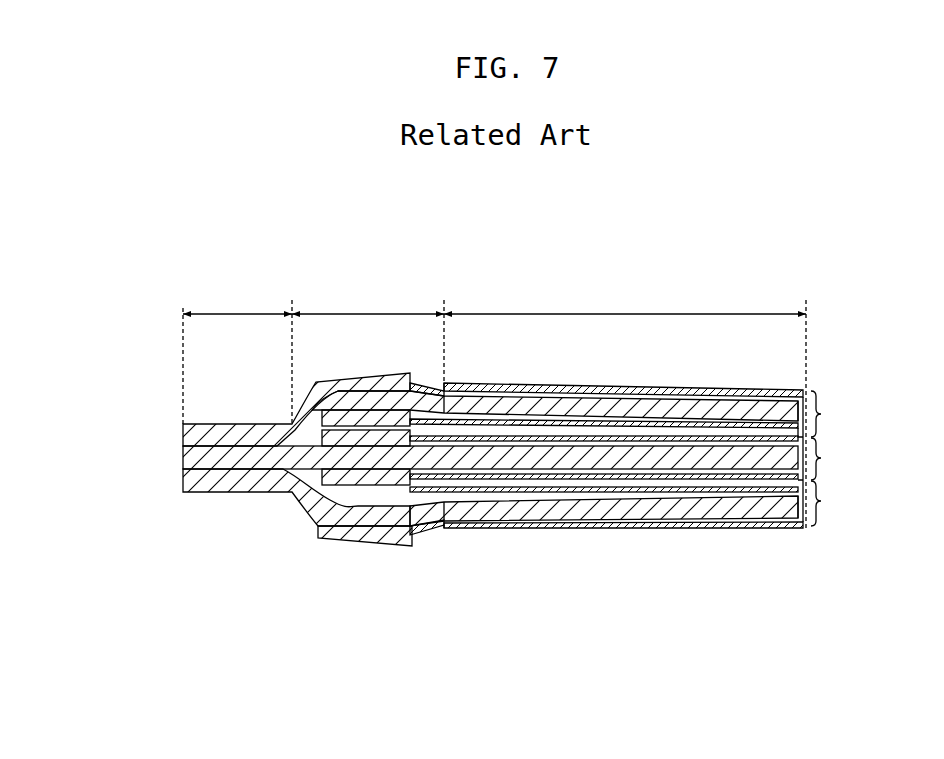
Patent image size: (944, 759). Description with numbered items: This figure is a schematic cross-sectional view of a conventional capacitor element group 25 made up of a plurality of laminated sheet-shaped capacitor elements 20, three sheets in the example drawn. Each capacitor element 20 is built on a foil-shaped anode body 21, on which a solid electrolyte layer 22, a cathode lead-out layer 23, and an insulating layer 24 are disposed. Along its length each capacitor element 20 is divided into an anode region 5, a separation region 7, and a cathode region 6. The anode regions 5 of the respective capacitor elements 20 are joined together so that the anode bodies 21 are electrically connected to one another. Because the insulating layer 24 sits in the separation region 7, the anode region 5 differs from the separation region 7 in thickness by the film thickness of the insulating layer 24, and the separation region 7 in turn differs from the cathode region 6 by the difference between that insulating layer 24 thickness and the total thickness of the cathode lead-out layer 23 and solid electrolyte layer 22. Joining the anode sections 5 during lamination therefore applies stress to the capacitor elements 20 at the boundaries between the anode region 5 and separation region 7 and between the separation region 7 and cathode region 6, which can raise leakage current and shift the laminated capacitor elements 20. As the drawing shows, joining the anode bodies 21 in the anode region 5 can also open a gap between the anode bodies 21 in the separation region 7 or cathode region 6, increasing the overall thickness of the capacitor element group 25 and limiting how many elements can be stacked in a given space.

The anode region 5 is at (237, 358).
The cathode region 6 is at (625, 410).
The separation region 7 is at (368, 338).
The capacitor element 20 is at (830, 458).
The anode body 21 is at (190, 477).
The solid electrolyte layer 22 is at (518, 519).
The cathode lead-out layer 23 is at (557, 516).
The insulating layer 24 is at (332, 503).
The capacitor element group 25 is at (522, 289).